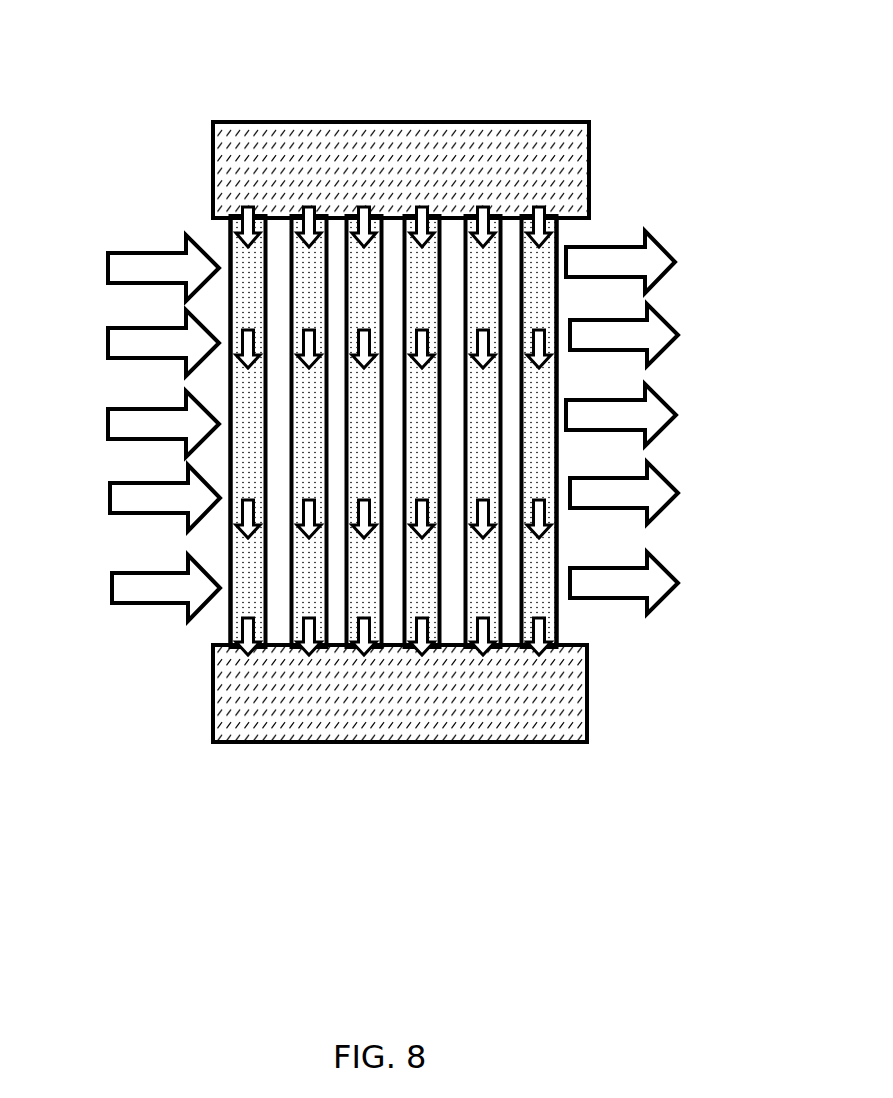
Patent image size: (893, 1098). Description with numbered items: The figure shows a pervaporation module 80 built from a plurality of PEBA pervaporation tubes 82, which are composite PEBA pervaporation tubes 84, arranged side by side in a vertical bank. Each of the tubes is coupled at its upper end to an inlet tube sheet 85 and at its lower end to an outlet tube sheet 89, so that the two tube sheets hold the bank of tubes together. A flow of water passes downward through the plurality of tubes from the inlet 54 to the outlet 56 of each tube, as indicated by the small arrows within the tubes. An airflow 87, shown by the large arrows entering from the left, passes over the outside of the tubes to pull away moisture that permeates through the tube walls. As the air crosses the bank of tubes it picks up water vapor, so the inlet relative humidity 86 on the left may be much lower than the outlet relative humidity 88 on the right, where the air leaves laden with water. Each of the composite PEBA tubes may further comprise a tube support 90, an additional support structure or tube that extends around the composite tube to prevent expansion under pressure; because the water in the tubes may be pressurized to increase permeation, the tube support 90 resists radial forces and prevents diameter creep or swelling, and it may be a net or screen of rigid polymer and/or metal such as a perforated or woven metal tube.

The pervaporation module 80 is at (203, 100).
The PEBA pervaporation tubes 82 is at (232, 620).
The composite PEBA pervaporation tubes 84 is at (555, 612).
The inlet tube sheet 85 is at (509, 132).
The inlet relative humidity 86 is at (76, 192).
The airflow 87 is at (167, 590).
The outlet relative humidity 88 is at (708, 228).
The outlet tube sheet 89 is at (490, 695).
The tube support 90 is at (548, 236).
The inlet 54 is at (306, 212).
The outlet 56 is at (365, 632).